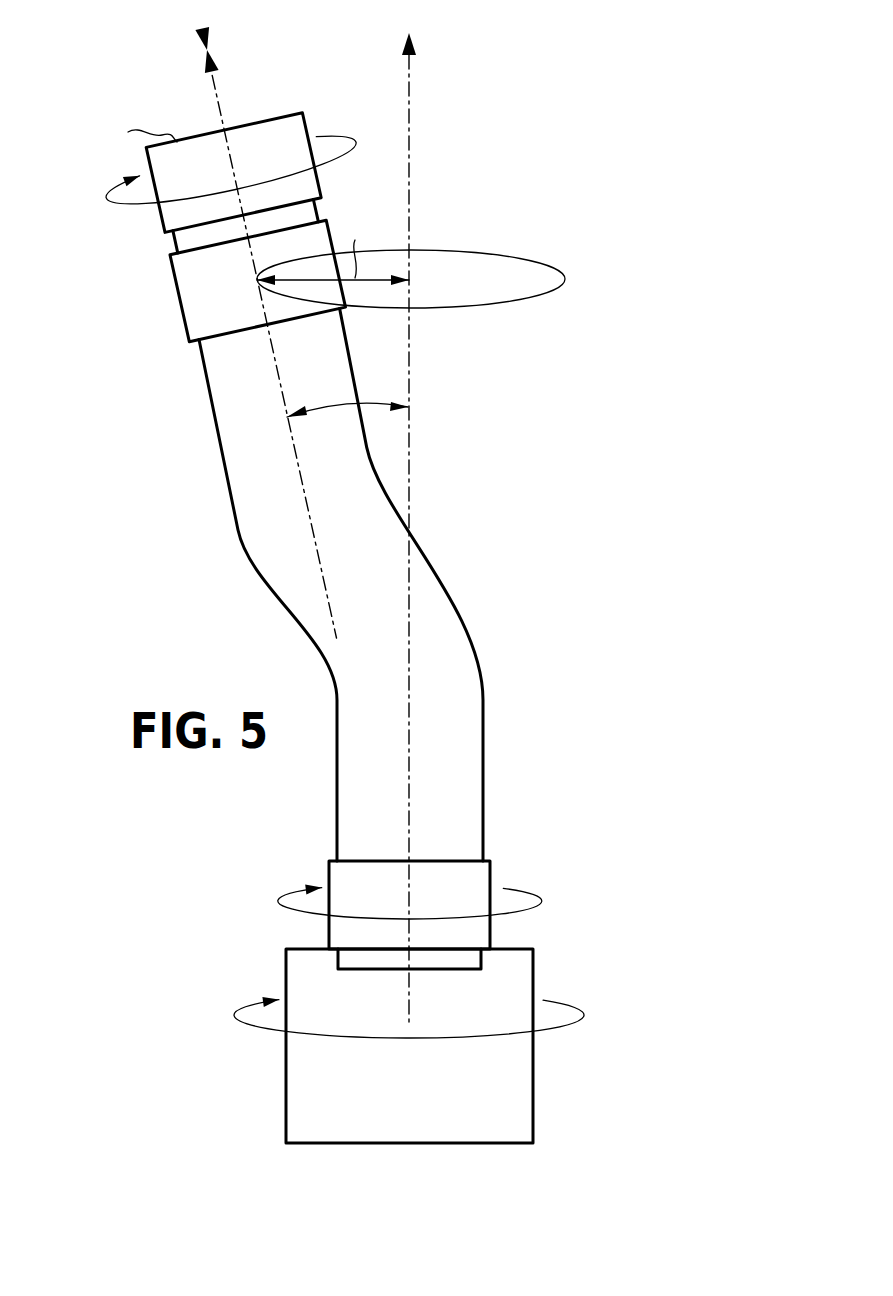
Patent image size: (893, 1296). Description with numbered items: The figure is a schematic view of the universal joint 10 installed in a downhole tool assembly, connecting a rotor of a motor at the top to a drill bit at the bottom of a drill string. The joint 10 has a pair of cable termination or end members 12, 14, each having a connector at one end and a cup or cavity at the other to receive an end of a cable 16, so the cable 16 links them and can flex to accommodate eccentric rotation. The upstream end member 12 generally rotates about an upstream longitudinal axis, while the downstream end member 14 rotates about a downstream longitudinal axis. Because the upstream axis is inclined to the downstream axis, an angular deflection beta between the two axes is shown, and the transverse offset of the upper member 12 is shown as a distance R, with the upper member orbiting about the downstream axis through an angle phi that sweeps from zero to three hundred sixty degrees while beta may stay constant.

The universal joint 10 is at (313, 573).
The end member 12 is at (180, 300).
The end member 14 is at (462, 861).
The cable 16 is at (215, 545).